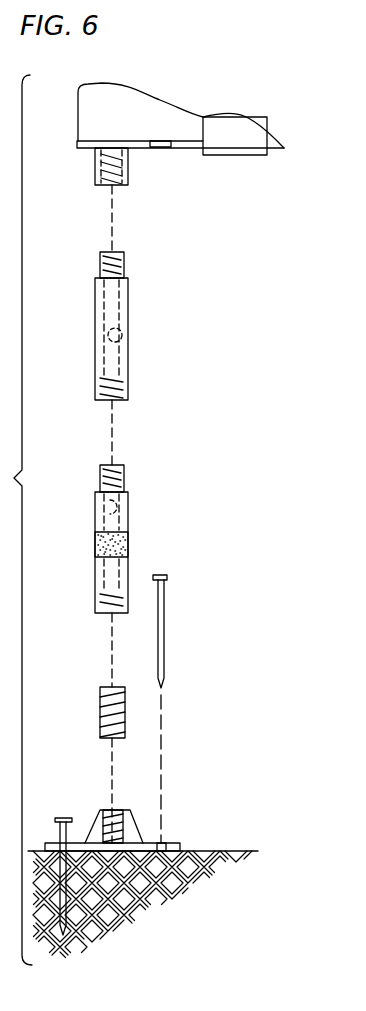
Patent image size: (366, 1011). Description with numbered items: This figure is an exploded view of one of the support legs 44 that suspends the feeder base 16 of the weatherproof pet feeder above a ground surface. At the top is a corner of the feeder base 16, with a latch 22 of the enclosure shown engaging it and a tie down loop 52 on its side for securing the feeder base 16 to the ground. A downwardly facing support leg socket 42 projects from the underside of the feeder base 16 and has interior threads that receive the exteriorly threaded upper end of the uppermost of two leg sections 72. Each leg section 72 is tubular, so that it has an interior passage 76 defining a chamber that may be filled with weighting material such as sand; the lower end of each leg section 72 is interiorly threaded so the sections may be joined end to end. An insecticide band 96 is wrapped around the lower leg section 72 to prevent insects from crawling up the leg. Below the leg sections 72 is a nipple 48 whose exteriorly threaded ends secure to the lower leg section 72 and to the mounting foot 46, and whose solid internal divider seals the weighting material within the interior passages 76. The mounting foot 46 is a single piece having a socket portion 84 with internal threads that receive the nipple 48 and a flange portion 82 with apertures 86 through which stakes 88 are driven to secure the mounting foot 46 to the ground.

The feeder base 16 is at (78, 143).
The latch 22 is at (218, 147).
The support leg socket 42 is at (96, 160).
The support leg 44 is at (74, 289).
The mounting foot 46 is at (176, 796).
The nipple 48 is at (100, 715).
The tie down loop 52 is at (158, 148).
The leg section 72 is at (113, 313).
The interior passage 76 is at (122, 345).
The flange portion 82 is at (180, 845).
The socket portion 84 is at (97, 812).
The aperture 86 is at (165, 843).
The stake 88 is at (162, 630).
The insecticide band 96 is at (128, 542).